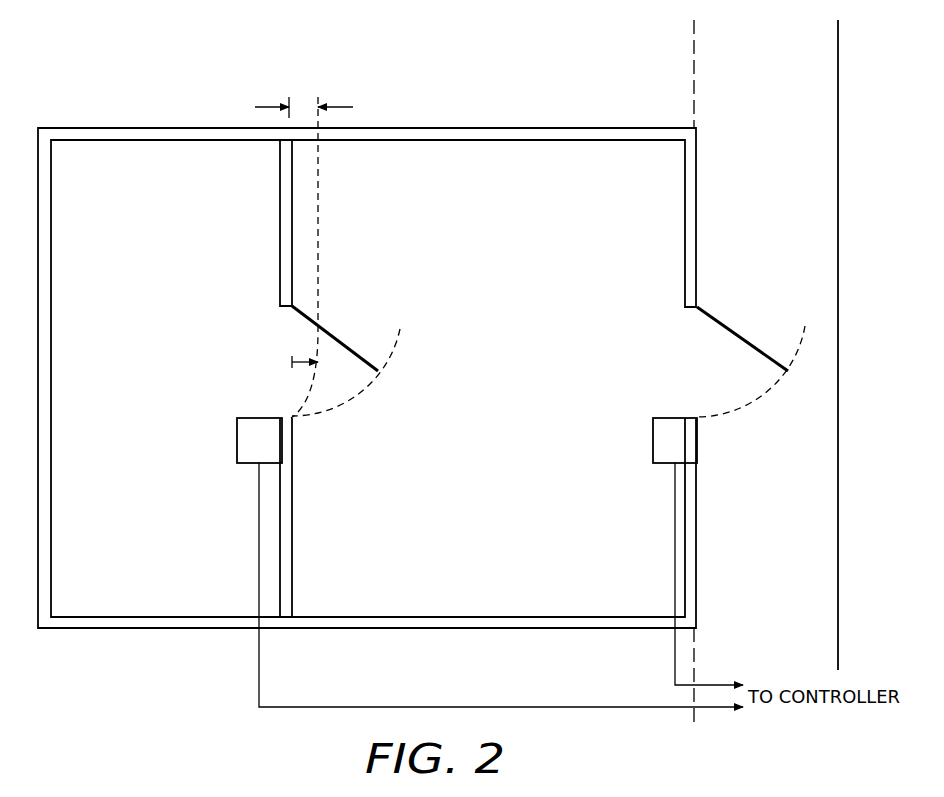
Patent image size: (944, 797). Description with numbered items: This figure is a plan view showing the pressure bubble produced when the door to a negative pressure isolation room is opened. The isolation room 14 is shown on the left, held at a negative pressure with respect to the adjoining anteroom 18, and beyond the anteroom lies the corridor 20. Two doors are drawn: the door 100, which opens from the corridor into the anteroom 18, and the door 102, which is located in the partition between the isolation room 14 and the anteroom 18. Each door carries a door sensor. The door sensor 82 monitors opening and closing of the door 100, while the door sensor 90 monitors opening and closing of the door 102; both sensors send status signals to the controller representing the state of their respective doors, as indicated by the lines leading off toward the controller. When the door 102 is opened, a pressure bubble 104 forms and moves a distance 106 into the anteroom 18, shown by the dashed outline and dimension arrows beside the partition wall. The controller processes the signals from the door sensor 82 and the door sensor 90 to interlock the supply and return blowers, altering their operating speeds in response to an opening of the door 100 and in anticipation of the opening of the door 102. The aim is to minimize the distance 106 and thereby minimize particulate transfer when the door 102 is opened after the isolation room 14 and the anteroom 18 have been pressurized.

The isolation room 14 is at (173, 306).
The anteroom 18 is at (511, 297).
The corridor 20 is at (754, 185).
The door sensor 82 is at (652, 441).
The door sensor 90 is at (237, 441).
The door 100 is at (745, 335).
The door 102 is at (337, 334).
The pressure bubble 104 is at (308, 321).
The distance 106 is at (300, 103).